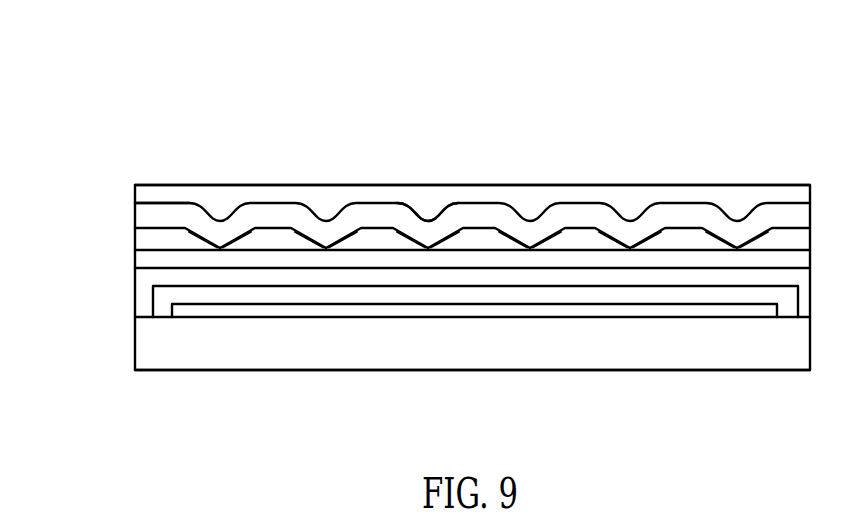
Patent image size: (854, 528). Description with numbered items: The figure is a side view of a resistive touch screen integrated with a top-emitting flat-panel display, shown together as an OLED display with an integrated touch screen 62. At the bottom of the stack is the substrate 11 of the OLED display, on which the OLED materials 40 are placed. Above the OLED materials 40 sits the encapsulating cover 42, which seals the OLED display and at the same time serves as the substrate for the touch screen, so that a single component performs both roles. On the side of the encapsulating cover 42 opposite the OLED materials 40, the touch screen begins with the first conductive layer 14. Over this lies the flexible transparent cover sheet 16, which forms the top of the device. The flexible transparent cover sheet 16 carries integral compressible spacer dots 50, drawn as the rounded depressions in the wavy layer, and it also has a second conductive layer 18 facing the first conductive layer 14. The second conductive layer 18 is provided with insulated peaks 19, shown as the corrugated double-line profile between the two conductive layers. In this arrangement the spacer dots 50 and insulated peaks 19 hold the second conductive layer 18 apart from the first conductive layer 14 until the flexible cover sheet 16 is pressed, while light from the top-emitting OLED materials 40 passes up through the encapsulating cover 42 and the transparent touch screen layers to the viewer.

The substrate 11 is at (138, 348).
The first conductive layer 14 is at (138, 258).
The flexible transparent cover sheet 16 is at (170, 195).
The second conductive layer 18 is at (138, 217).
The insulated peaks 19 is at (328, 246).
The OLED materials 40 is at (678, 310).
The encapsulating cover 42 is at (138, 288).
The compressible spacer dots 50 is at (428, 219).
The OLED display with an integrated touch screen 62 is at (622, 117).